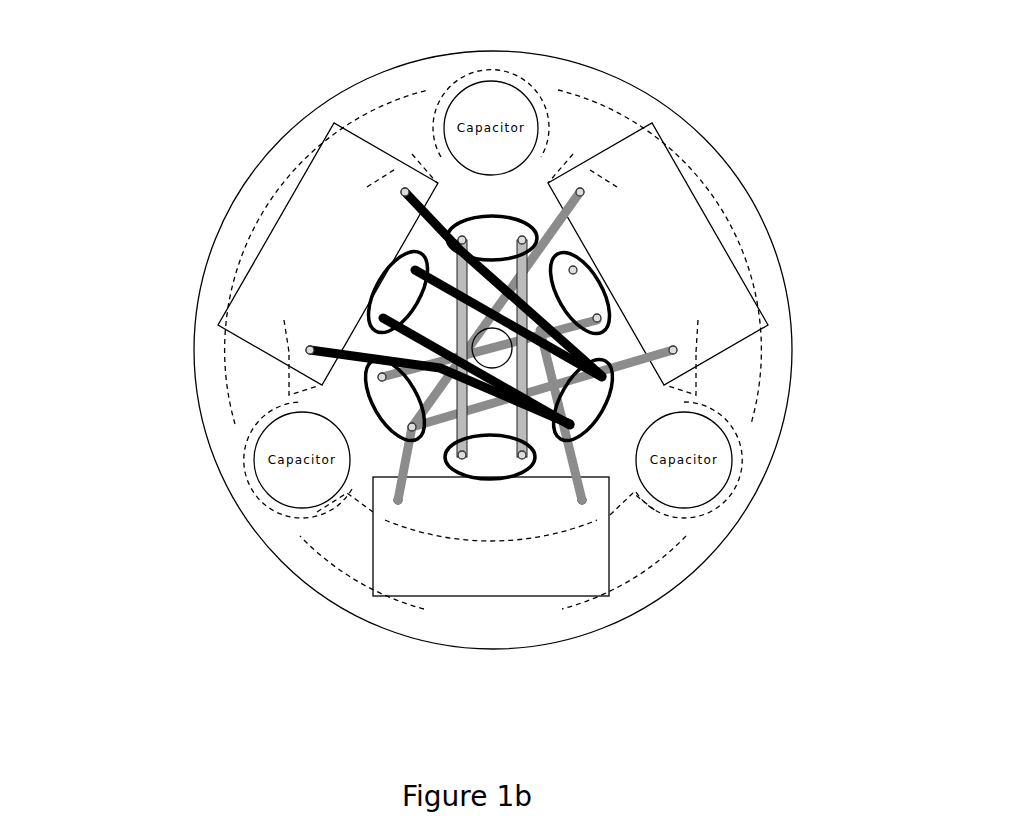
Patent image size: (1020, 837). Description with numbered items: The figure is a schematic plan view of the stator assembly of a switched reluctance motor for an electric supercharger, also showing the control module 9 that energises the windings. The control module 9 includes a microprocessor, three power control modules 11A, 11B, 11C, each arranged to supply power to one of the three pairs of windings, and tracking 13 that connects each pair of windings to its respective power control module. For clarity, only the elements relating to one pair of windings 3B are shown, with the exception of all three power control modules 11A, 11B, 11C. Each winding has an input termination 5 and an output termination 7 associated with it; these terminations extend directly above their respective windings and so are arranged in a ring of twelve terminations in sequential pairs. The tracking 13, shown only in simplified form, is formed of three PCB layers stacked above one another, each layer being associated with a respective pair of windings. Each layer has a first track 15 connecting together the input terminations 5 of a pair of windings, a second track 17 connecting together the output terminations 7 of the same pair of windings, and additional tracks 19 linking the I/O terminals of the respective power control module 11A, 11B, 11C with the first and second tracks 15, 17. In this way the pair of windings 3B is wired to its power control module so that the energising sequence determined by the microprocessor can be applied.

The control module 9 is at (192, 385).
The power control module 11A is at (538, 577).
The power control module 11B is at (337, 157).
The power control module 11C is at (652, 160).
The additional tracks 19 is at (403, 187).
The output termination 7 is at (483, 301).
The input termination 5 is at (560, 398).
The second track 17 is at (513, 373).
The first track 15 is at (425, 312).
The tracking 13 is at (427, 382).
The pair of windings 3B is at (402, 295).